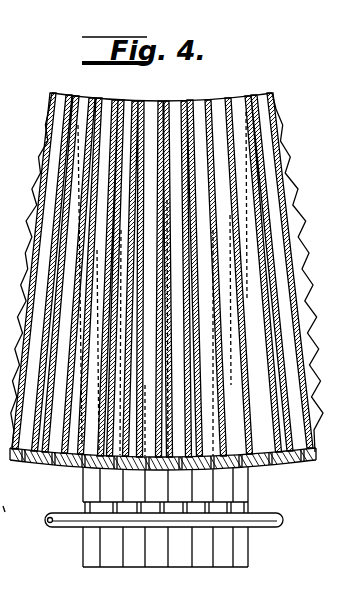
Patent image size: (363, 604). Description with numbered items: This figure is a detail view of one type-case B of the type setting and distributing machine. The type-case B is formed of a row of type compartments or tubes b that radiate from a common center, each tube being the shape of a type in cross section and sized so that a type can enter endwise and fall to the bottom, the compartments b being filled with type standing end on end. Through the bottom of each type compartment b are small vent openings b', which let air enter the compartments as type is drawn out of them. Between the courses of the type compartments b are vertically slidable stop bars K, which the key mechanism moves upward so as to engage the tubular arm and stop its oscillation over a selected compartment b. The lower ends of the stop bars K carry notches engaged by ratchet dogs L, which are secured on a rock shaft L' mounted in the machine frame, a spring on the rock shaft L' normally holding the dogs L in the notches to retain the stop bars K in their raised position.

The type-case B is at (203, 98).
The type compartments b is at (162, 275).
The vent openings b' is at (163, 469).
The ratchet dogs L is at (178, 490).
The rock shaft L' is at (147, 531).
The stop bars K is at (134, 568).